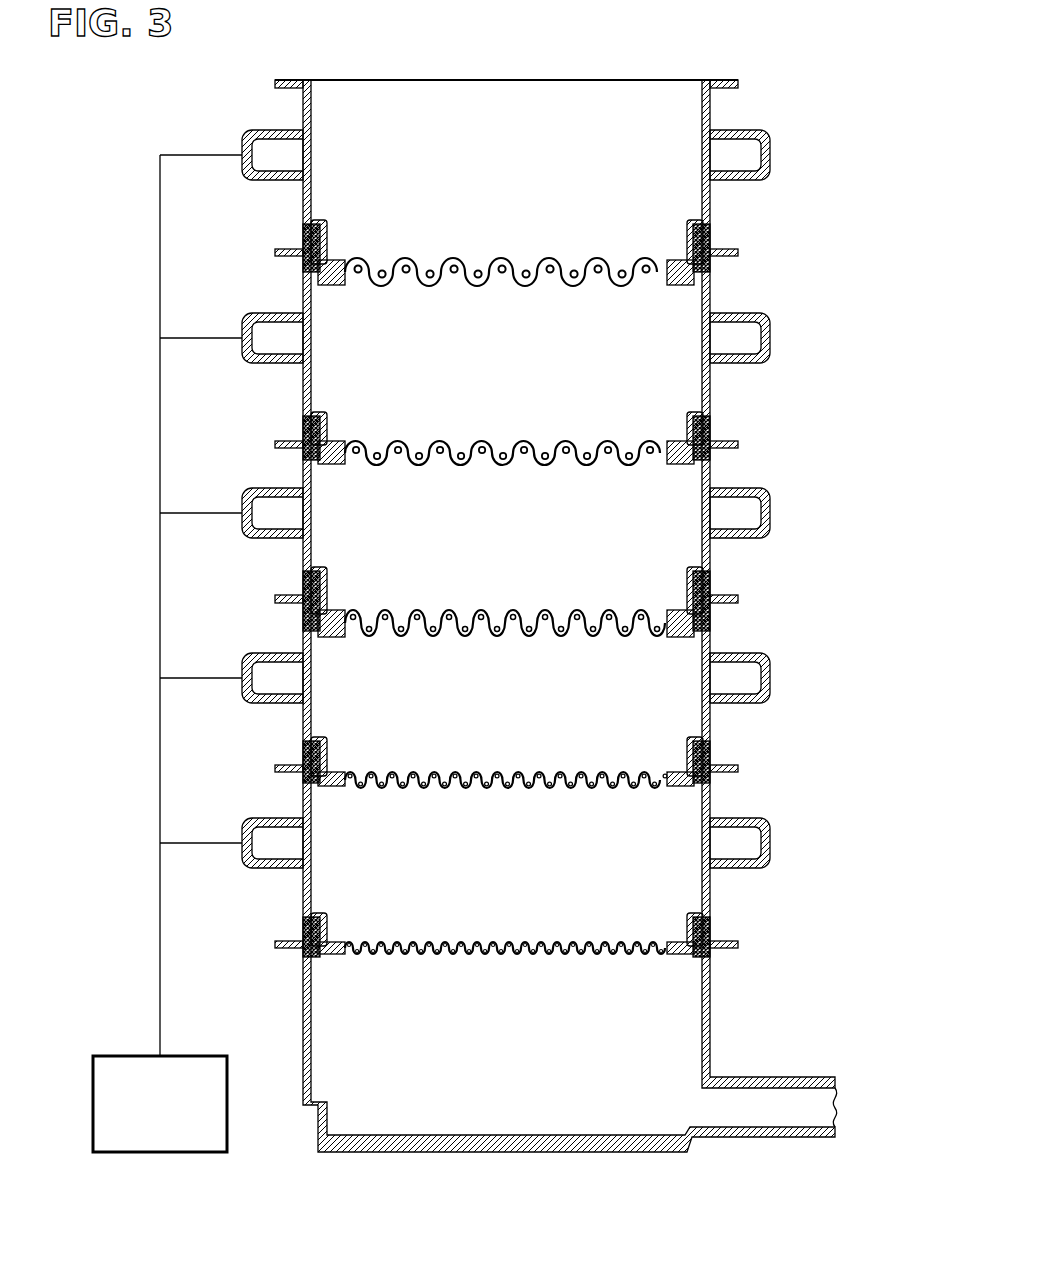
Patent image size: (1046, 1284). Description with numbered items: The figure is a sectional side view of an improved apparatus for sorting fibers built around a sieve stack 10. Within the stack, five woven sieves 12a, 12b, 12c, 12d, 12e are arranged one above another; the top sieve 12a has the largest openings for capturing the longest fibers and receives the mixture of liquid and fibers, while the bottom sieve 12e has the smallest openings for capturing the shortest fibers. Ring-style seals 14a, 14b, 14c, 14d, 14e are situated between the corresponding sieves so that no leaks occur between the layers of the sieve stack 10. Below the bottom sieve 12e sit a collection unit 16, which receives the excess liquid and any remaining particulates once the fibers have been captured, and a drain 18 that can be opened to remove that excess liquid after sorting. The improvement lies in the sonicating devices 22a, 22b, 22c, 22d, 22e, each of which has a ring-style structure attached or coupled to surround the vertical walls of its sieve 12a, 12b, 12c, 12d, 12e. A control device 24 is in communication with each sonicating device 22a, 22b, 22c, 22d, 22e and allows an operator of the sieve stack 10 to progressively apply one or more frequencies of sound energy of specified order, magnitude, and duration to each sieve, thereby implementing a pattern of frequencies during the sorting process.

The sieve stack 10 is at (549, 594).
The top sieve 12a is at (430, 250).
The sieve 12b is at (430, 428).
The sieve 12c is at (430, 608).
The sieve 12d is at (430, 768).
The bottom sieve 12e is at (430, 937).
The ring-style seal 14a is at (712, 237).
The ring-style seal 14b is at (712, 430).
The ring-style seal 14c is at (712, 588).
The ring-style seal 14d is at (712, 757).
The ring-style seal 14e is at (712, 930).
The collection unit 16 is at (303, 1040).
The drain 18 is at (765, 1077).
The sonicating device 22a is at (262, 131).
The sonicating device 22b is at (262, 313).
The sonicating device 22c is at (262, 488).
The sonicating device 22d is at (262, 653).
The sonicating device 22e is at (262, 818).
The control device 24 is at (128, 1056).